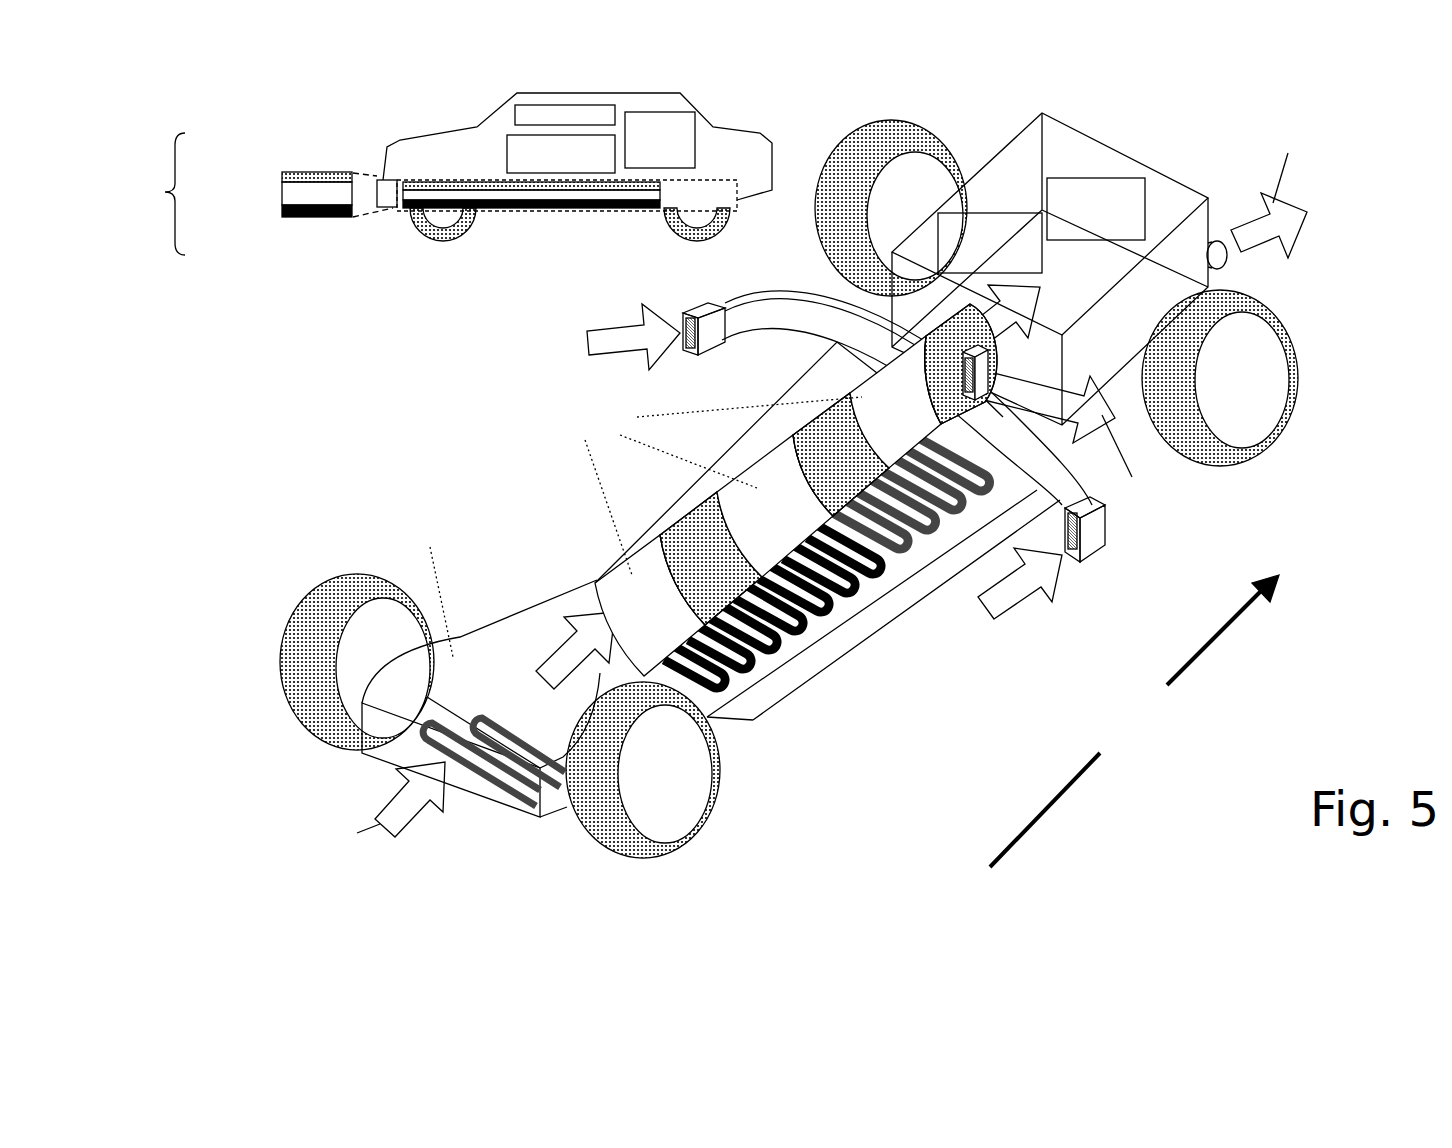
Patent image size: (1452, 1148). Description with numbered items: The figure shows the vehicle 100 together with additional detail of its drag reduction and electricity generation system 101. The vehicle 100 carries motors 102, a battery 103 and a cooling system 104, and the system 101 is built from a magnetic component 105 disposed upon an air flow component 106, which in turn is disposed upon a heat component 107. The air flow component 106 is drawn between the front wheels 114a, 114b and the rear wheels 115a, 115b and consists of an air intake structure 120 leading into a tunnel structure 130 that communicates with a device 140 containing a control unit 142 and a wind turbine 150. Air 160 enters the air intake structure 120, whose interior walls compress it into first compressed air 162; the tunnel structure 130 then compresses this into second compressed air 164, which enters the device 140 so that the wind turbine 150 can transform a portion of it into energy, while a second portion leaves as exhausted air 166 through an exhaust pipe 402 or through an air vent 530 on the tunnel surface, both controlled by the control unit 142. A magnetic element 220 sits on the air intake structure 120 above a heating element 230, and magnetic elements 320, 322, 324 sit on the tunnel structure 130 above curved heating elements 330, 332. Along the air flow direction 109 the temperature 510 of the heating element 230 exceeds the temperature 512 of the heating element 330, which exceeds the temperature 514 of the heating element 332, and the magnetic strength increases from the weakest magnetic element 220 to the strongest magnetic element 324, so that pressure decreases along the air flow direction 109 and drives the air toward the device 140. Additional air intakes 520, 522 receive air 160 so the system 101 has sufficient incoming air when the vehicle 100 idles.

The vehicle 100 is at (563, 161).
The system 101 is at (259, 214).
The motors 102 is at (660, 140).
The battery 103 is at (565, 115).
The cooling system 104 is at (561, 154).
The magnetic component 105 is at (305, 155).
The air flow component 106 is at (293, 193).
The heat component 107 is at (297, 218).
The air flow direction 109 is at (1134, 721).
The front wheel 114a is at (300, 597).
The front wheel 114b is at (710, 817).
The rear wheel 115a is at (928, 102).
The rear wheel 115b is at (1240, 460).
The air intake structure 120 is at (488, 711).
The tunnel structure 130 is at (782, 524).
The device 140 is at (1050, 267).
The control unit 142 is at (1096, 209).
The wind turbine 150 is at (990, 243).
The air 160 is at (700, 572).
The first compressed air 162 is at (575, 650).
The second compressed air 164 is at (1006, 314).
The exhausted air 166 is at (1164, 324).
The magnetic element 220 is at (498, 701).
The heating element 230 is at (482, 806).
The magnetic element 320 is at (650, 605).
The magnetic element 322 is at (775, 506).
The magnetic element 324 is at (895, 402).
The heating element 330 is at (805, 634).
The heating element 332 is at (935, 558).
The exhaust pipe 402 is at (1232, 268).
The temperature 510 is at (471, 886).
The temperature 512 is at (870, 736).
The temperature 514 is at (960, 672).
The air intake 520 is at (705, 337).
The air intake 522 is at (1097, 533).
The air vent 530 is at (945, 372).